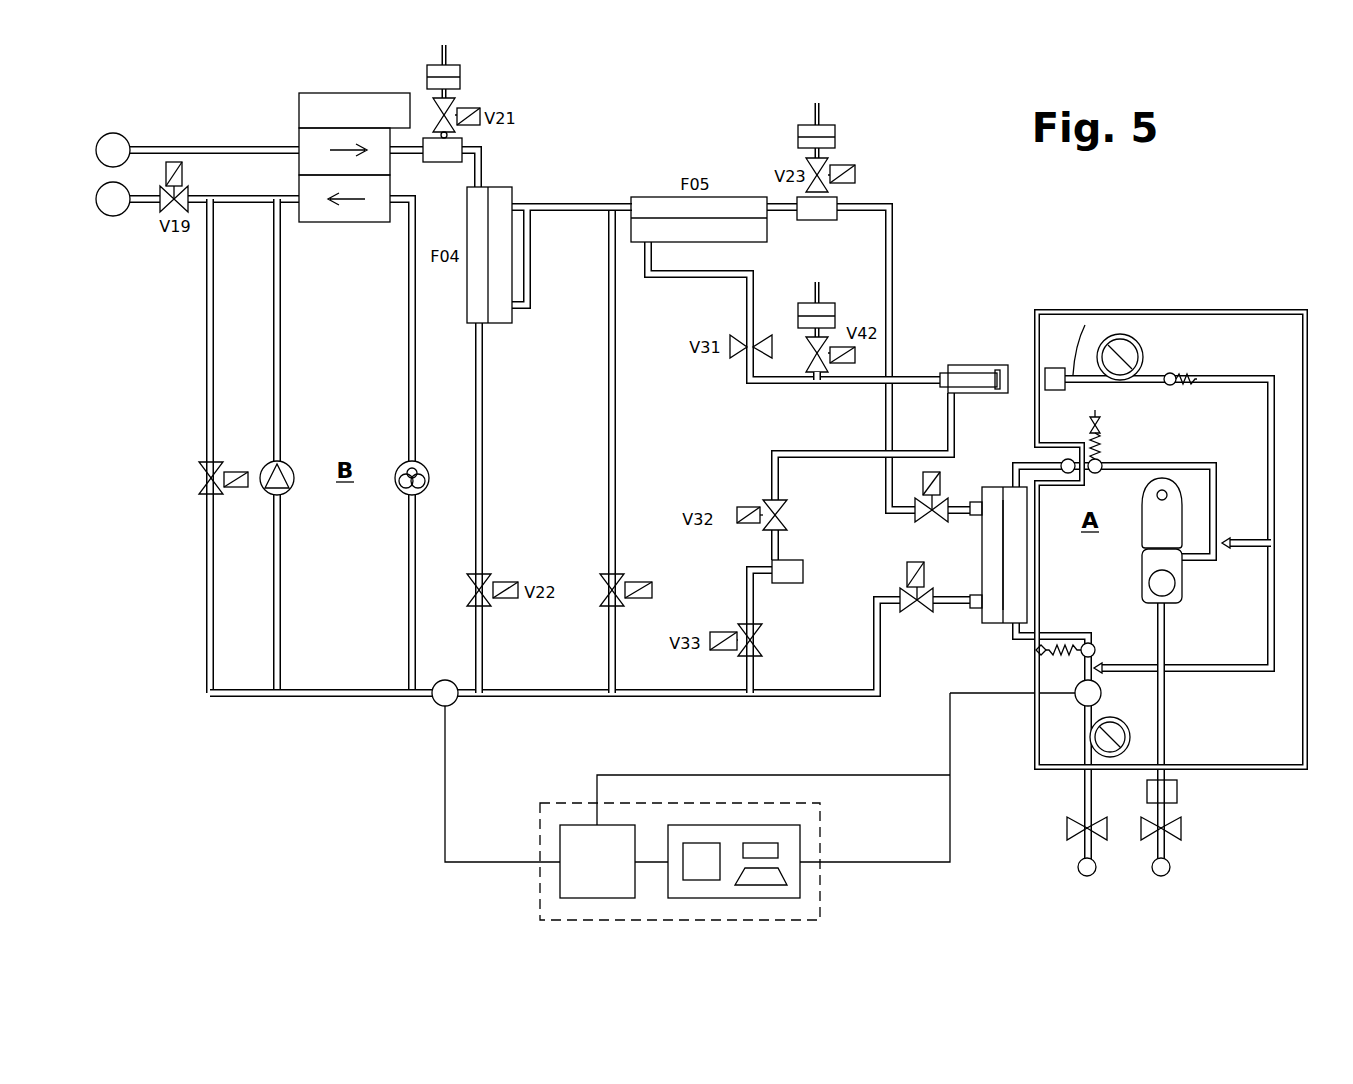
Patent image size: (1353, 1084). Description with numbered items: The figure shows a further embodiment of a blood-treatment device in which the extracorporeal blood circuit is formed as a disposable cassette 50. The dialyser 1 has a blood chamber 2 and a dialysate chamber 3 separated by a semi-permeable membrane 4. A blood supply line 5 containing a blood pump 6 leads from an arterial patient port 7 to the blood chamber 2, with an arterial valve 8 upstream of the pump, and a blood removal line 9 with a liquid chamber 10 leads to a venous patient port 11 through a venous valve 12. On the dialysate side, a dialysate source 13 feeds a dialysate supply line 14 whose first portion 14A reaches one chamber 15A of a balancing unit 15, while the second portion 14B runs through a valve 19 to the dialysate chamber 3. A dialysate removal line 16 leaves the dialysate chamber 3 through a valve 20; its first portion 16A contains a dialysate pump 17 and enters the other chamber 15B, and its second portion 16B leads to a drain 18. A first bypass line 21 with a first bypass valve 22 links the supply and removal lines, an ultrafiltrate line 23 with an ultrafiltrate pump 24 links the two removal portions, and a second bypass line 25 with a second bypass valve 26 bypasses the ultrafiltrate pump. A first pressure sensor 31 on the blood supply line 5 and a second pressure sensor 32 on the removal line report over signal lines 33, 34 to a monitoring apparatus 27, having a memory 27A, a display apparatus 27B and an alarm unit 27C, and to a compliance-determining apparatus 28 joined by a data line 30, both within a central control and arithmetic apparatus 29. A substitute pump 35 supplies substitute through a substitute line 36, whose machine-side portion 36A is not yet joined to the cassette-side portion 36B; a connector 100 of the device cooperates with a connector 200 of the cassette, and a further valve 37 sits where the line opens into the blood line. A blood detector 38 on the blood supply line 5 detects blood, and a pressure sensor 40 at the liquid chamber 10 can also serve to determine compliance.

The dialyser 1 is at (1007, 586).
The blood chamber 2 is at (1027, 595).
The dialysate chamber 3 is at (982, 548).
The semi-permeable membrane 4 is at (985, 610).
The blood supply line 5 is at (1083, 793).
The blood pump 6 is at (1090, 737).
The arterial patient port 7 is at (1087, 877).
The arterial valve 8 is at (1067, 828).
The blood removal line 9 is at (1187, 462).
The liquid chamber 10 is at (1155, 583).
The venous patient port 11 is at (1161, 877).
The venous valve 12 is at (1183, 828).
The dialysate source 13 is at (113, 133).
The dialysate supply line 14 is at (482, 167).
The first portion of the dialysate supply line 14A is at (158, 147).
The second portion of the dialysate supply line 14B is at (895, 235).
The balancing unit 15 is at (299, 110).
The one chamber of the balancing unit 15A is at (299, 140).
The other chamber of the balancing unit 15B is at (348, 222).
The dialysate removal line 16 is at (410, 341).
The first portion of the dialysate removal line 16A is at (680, 697).
The second portion of the dialysate removal line 16B is at (282, 203).
The dialysate pump 17 is at (405, 500).
The drain 18 is at (113, 217).
The valve 19 is at (922, 518).
The valve 20 is at (915, 615).
The first bypass line 21 is at (615, 470).
The first bypass valve 22 is at (625, 578).
The ultrafiltrate line 23 is at (280, 378).
The ultrafiltrate pump 24 is at (293, 468).
The second bypass line 25 is at (207, 588).
The second bypass valve 26 is at (205, 483).
The monitoring apparatus 27 is at (776, 894).
The memory 27A is at (703, 880).
The display apparatus 27B is at (778, 850).
The alarm unit 27C is at (765, 885).
The compliance-determining apparatus 28 is at (560, 885).
The central control and arithmetic apparatus 29 is at (540, 848).
The data line 30 is at (655, 866).
The first pressure sensor 31 is at (1102, 693).
The second pressure sensor 32 is at (440, 706).
The signal line 33 is at (950, 745).
The signal line 34 is at (447, 792).
The substitute pump 35 is at (1120, 334).
The substitute line 36 is at (1228, 375).
The machine-side portion of the substituate line 36A is at (760, 384).
The cassette-side line portion 36B is at (1085, 325).
The further valve 37 is at (1229, 540).
The blood detector 38 is at (1177, 790).
The pressure sensor 40 is at (1178, 585).
The disposable cassette 50 is at (1182, 300).
The connector 100 is at (960, 365).
The connector 200 is at (1048, 368).